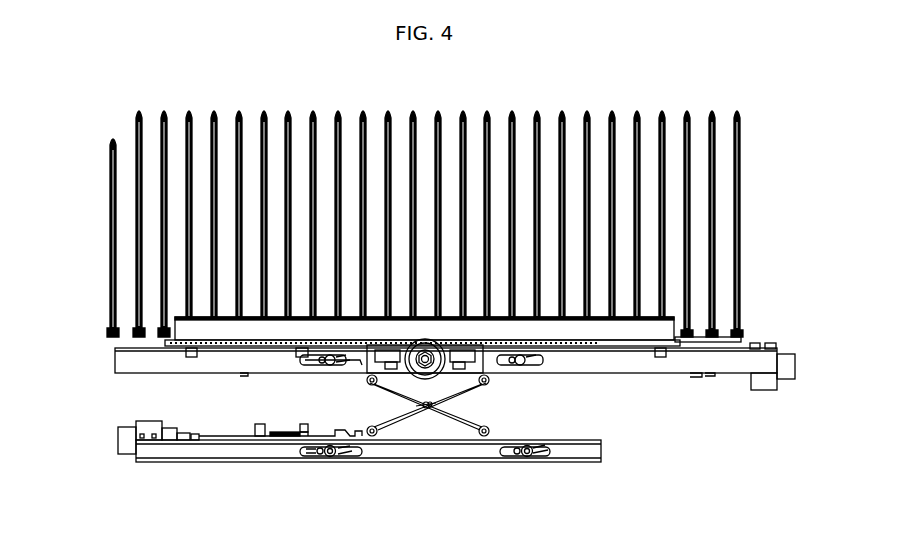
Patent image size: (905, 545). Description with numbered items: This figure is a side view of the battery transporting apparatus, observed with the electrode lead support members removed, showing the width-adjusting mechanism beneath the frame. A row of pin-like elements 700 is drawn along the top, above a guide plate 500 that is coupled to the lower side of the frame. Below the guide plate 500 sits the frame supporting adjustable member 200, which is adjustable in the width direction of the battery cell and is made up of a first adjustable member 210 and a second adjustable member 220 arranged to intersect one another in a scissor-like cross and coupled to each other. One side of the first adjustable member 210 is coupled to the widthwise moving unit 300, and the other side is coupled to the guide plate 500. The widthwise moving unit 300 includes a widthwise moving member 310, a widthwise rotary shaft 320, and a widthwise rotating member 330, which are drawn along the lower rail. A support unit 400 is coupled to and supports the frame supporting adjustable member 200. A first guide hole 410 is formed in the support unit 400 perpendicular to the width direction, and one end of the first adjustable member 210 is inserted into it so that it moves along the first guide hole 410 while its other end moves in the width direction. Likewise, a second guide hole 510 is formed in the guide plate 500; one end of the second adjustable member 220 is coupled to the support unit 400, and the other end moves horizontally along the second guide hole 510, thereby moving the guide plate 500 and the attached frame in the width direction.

The pin heat sink 700 is at (139, 108).
The guide plate 500 is at (767, 360).
The widthwise moving unit 300 is at (86, 400).
The widthwise rotating member 330 is at (104, 436).
The widthwise rotary shaft 320 is at (227, 437).
The widthwise moving member 310 is at (322, 432).
The frame supporting adjustable member 200 is at (565, 407).
The first adjustable member 210 is at (485, 383).
The second adjustable member 220 is at (485, 430).
The support unit 400 is at (596, 449).
The first guide hole 410 is at (358, 457).
The second guide hole 510 is at (360, 365).